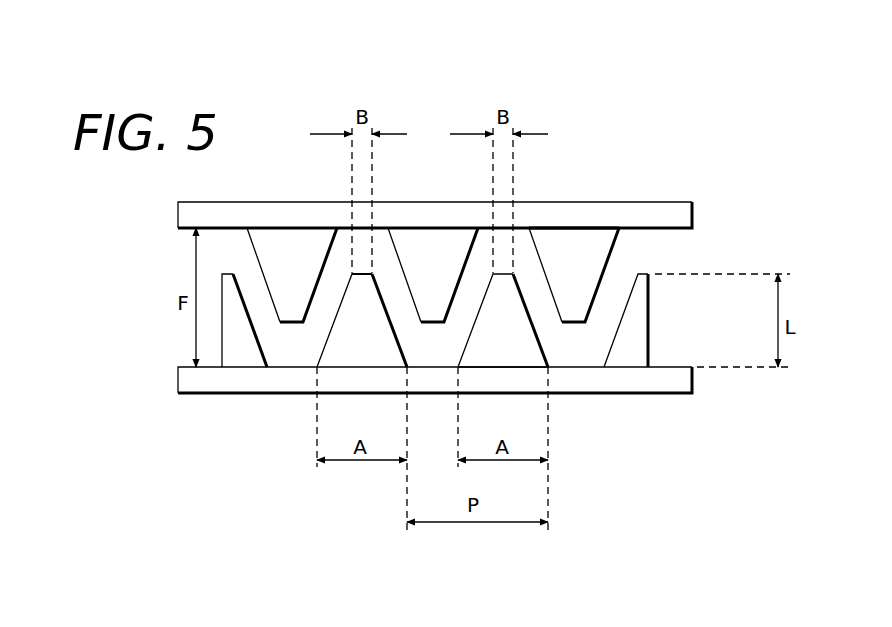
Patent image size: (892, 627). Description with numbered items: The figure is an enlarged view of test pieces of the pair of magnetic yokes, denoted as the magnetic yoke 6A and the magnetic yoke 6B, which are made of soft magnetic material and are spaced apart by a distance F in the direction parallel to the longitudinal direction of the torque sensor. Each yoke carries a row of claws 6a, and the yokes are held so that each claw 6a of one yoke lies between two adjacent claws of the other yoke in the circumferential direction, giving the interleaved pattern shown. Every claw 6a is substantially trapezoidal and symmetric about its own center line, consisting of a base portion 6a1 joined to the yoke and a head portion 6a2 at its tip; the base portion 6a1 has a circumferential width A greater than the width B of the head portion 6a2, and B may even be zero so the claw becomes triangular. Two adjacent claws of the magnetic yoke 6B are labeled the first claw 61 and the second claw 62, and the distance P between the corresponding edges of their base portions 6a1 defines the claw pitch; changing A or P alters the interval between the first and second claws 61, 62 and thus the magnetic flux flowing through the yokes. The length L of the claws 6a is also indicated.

The magnetic yoke 6A is at (660, 213).
The magnetic yoke 6B is at (673, 378).
The claw 6a is at (583, 262).
The base portion 6a1 is at (575, 227).
The head portion 6a2 is at (358, 272).
The first claw 61 is at (337, 343).
The second claw 62 is at (520, 335).